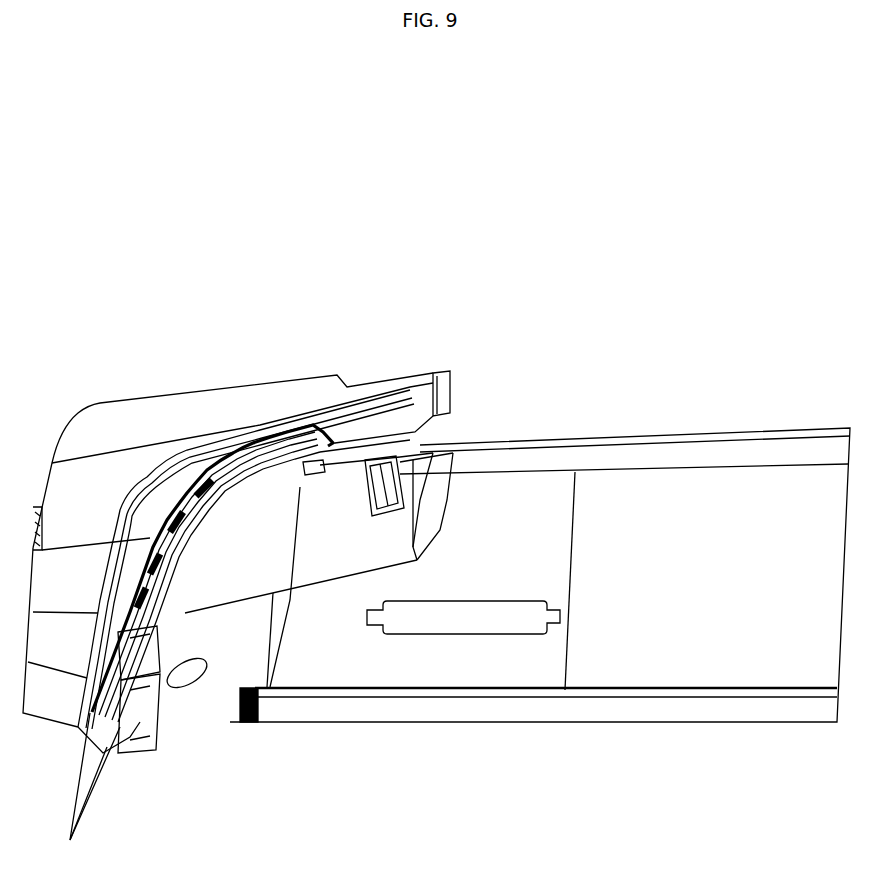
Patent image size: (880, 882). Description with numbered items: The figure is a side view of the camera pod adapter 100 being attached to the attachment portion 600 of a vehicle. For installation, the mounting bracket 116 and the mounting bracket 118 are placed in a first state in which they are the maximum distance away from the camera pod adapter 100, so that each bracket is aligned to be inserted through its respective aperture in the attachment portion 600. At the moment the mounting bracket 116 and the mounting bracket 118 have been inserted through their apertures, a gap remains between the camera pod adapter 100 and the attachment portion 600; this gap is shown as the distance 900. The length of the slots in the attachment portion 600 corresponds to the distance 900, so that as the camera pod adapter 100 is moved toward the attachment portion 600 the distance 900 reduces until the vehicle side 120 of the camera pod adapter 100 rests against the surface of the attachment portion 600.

The camera pod adapter 100 is at (181, 398).
The mounting bracket 116 is at (207, 530).
The mounting bracket 118 is at (163, 620).
The vehicle side 120 is at (215, 447).
The attachment portion 600 is at (705, 450).
The distance 900 is at (383, 445).